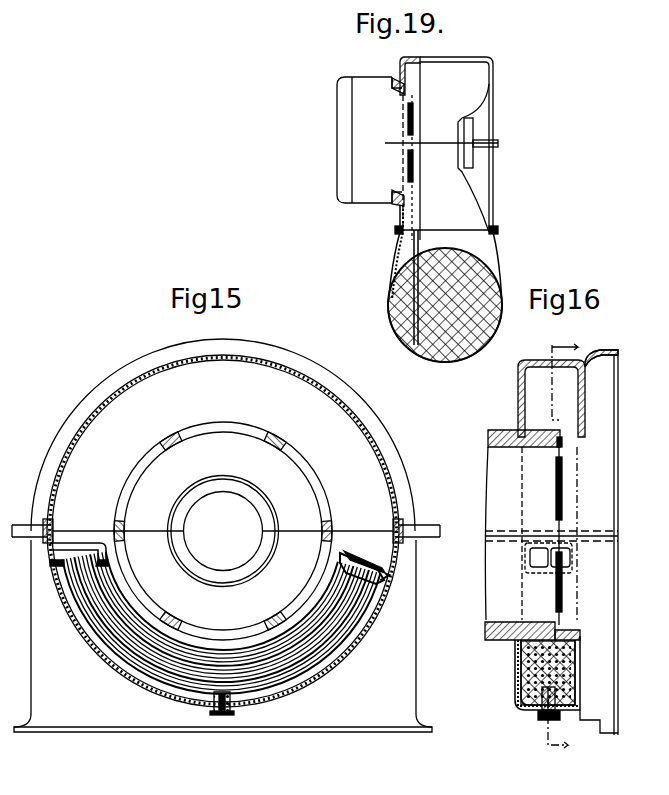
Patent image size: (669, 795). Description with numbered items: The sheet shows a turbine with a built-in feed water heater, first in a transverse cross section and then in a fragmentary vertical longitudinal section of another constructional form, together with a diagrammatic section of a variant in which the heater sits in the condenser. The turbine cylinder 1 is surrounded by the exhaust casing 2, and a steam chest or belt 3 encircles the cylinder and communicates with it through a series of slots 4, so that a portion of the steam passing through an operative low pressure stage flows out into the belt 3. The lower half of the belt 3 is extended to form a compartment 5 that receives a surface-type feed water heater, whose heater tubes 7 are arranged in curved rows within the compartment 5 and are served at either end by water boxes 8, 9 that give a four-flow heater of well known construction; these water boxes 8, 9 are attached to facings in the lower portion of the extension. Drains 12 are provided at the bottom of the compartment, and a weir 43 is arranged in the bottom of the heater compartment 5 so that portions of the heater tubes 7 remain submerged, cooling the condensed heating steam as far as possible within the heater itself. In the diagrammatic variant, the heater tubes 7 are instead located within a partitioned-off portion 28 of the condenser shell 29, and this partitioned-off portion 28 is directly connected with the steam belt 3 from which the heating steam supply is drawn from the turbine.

In FIG. 19, the turbine cylinder 1 is at (367, 86).
In FIG. 16, the turbine cylinder 1 is at (515, 446).
In FIG. 15, the exhaust casing 2 is at (135, 376).
In FIG. 19, the exhaust casing 2 is at (462, 59).
In FIG. 16, the exhaust casing 2 is at (607, 351).
In FIG. 15, the steam chest or belt 3 is at (290, 405).
In FIG. 19, the steam chest or belt 3 is at (412, 62).
In FIG. 16, the steam chest or belt 3 is at (535, 373).
In FIG. 15, the slots 4 is at (210, 441).
In FIG. 19, the slots 4 is at (411, 118).
In FIG. 16, the slots 4 is at (564, 438).
In FIG. 15, the compartment 5 is at (330, 665).
In FIG. 19, the compartment 5 is at (418, 240).
In FIG. 16, the compartment 5 is at (516, 666).
In FIG. 15, the heater tubes 7 is at (142, 657).
In FIG. 19, the heater tubes 7 is at (390, 316).
In FIG. 16, the heater tubes 7 is at (578, 652).
In FIG. 15, the water box 8 is at (380, 573).
In FIG. 15, the water box 9 is at (78, 554).
In FIG. 16, the water box 9 is at (535, 556).
In FIG. 15, the drains 12 is at (215, 714).
In FIG. 16, the drains 12 is at (548, 722).
In FIG. 19, the partitioned-off portion 28 is at (406, 242).
In FIG. 19, the condenser shell 29 is at (497, 284).
In FIG. 15, the weir 43 is at (228, 706).
In FIG. 16, the weir 43 is at (560, 699).